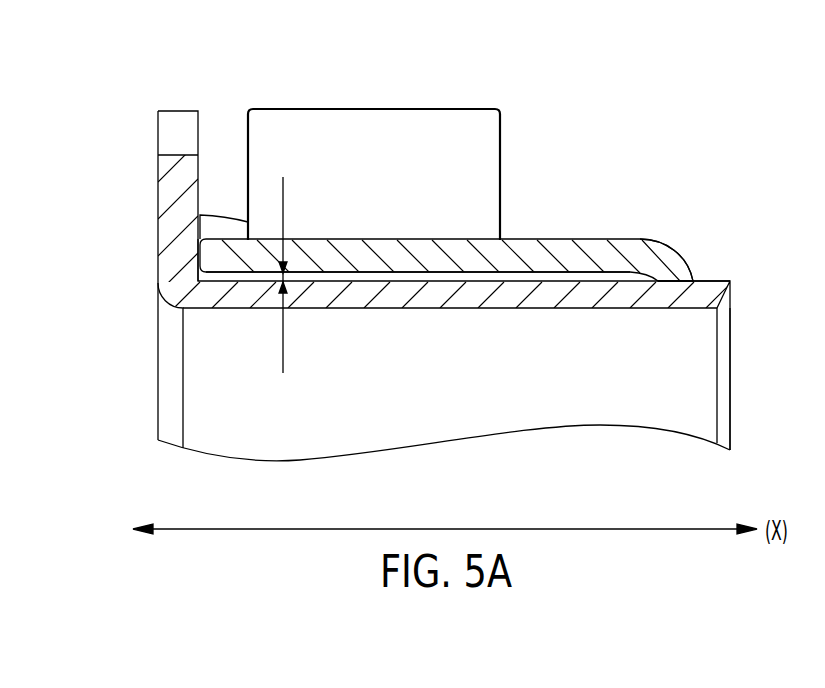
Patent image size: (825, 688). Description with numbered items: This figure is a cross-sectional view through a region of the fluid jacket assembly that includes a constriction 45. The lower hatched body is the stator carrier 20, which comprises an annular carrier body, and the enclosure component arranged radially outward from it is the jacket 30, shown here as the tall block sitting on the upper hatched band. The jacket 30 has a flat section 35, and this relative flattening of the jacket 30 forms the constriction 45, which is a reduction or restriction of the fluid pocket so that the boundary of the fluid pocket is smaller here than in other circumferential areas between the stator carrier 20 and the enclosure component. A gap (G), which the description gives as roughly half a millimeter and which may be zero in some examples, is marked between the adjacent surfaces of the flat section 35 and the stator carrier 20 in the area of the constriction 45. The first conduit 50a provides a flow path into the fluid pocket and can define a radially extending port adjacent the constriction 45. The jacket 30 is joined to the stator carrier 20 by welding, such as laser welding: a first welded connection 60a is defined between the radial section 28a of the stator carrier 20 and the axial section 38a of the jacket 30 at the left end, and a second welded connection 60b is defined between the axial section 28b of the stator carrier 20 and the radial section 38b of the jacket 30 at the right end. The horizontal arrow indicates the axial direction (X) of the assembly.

The stator carrier 20 is at (540, 303).
The radial section of the stator carrier 28a is at (178, 290).
The axial section of the stator carrier 28b is at (662, 298).
The jacket 30 is at (365, 240).
The flat section of the jacket 35 is at (563, 253).
The axial section of the jacket 38a is at (203, 217).
The radial section of the jacket 38b is at (658, 273).
The constriction 45 is at (485, 271).
The first conduit 50a is at (487, 155).
The first welded connection 60a is at (183, 275).
The second welded connection 60b is at (672, 281).